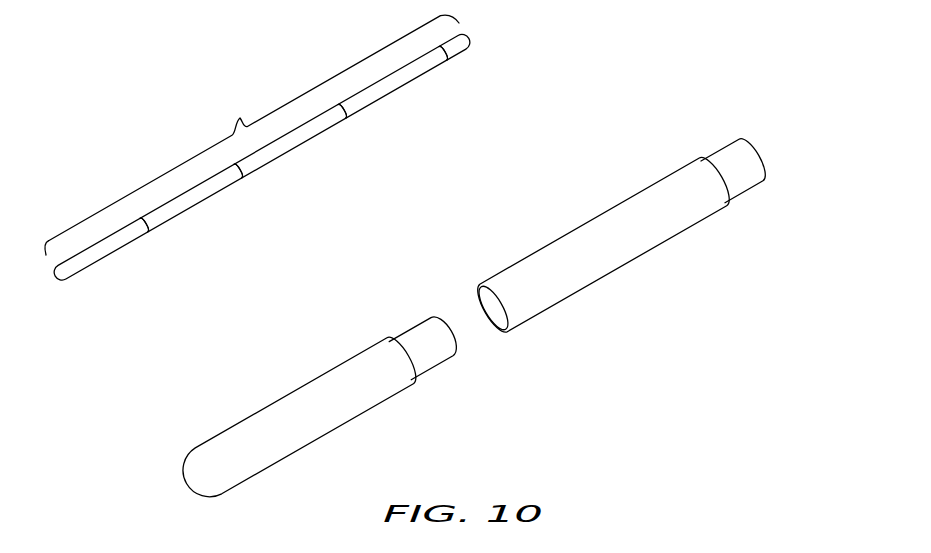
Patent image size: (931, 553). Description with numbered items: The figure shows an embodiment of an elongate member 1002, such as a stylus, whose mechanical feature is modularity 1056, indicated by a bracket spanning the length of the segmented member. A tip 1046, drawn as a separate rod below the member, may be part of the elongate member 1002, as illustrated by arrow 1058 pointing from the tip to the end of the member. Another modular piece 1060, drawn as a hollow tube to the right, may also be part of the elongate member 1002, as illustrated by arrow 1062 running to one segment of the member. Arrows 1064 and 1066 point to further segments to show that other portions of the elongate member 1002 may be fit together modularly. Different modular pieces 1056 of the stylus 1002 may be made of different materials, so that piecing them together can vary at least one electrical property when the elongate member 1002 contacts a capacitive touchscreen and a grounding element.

The elongate member 1002 is at (443, 63).
The modularity 1056 is at (252, 135).
The arrow 1058 is at (114, 270).
The arrow 1062 is at (542, 244).
The arrow 1064 is at (542, 244).
The arrow 1066 is at (542, 244).
The modular piece 1060 is at (632, 260).
The tip 1046 is at (320, 438).